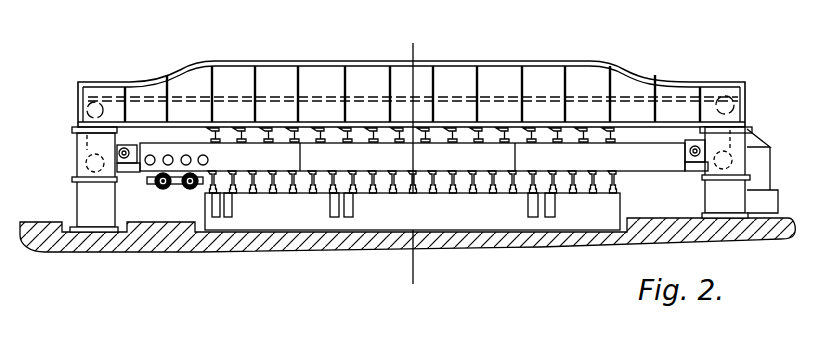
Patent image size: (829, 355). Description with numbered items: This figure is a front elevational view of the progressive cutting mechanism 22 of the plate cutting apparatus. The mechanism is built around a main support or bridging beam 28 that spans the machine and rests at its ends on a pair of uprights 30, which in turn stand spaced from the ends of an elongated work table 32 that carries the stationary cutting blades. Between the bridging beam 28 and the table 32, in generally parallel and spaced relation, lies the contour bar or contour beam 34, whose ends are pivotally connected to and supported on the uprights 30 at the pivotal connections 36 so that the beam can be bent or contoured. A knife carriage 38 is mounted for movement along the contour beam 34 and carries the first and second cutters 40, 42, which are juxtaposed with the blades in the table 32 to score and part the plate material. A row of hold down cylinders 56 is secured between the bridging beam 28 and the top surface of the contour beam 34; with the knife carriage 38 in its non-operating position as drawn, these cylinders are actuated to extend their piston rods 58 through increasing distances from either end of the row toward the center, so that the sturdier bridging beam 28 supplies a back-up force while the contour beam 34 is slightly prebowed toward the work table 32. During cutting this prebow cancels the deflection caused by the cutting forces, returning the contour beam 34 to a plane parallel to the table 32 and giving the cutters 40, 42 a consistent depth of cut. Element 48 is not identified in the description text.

The progressive cutting mechanism 22 is at (618, 62).
The bridging beam 28 is at (385, 62).
The uprights 30 is at (77, 191).
The work table 32 is at (222, 223).
The contour beam 34 is at (463, 141).
The pivotal connections 36 is at (116, 172).
The knife carriage 38 is at (147, 178).
The cutter 40 is at (162, 190).
The cutter 42 is at (190, 190).
The support leg 48 is at (257, 186).
The hold down cylinders 56 is at (221, 128).
The piston rods 58 is at (208, 138).